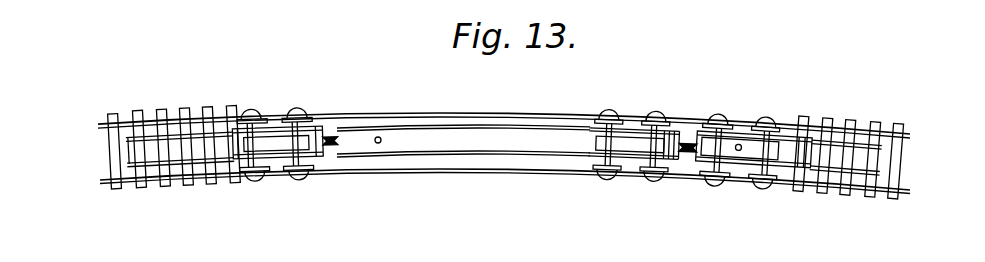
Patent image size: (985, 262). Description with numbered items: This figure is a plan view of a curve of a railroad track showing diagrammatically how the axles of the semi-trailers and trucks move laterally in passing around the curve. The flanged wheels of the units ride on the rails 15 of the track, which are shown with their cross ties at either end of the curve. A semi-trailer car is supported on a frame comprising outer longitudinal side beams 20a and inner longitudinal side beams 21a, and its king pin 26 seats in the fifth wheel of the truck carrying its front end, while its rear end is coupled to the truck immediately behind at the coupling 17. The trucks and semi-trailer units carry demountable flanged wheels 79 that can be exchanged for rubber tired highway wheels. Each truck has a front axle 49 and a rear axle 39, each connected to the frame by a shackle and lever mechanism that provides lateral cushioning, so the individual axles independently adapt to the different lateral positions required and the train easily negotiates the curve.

The rails 15 is at (910, 189).
The outer longitudinal side beams 20a is at (125, 152).
The inner longitudinal side beams 21a is at (600, 145).
The demountable flanged wheels 79 is at (298, 108).
The coupling 17 is at (326, 160).
The king pin 26 is at (378, 144).
The front axle 49 is at (609, 179).
The rear axle 39 is at (657, 179).